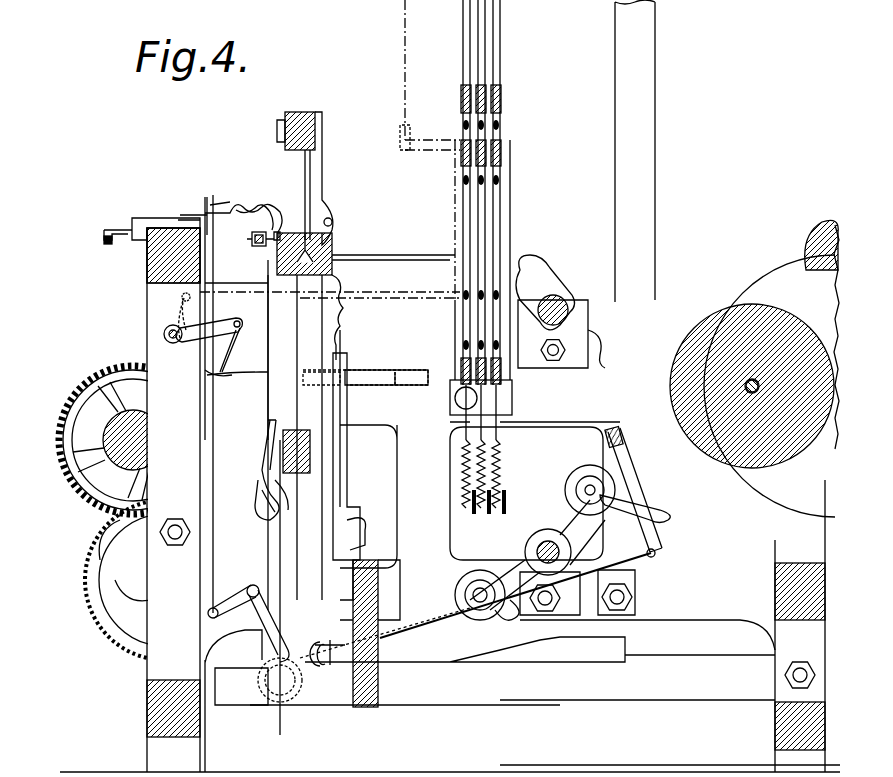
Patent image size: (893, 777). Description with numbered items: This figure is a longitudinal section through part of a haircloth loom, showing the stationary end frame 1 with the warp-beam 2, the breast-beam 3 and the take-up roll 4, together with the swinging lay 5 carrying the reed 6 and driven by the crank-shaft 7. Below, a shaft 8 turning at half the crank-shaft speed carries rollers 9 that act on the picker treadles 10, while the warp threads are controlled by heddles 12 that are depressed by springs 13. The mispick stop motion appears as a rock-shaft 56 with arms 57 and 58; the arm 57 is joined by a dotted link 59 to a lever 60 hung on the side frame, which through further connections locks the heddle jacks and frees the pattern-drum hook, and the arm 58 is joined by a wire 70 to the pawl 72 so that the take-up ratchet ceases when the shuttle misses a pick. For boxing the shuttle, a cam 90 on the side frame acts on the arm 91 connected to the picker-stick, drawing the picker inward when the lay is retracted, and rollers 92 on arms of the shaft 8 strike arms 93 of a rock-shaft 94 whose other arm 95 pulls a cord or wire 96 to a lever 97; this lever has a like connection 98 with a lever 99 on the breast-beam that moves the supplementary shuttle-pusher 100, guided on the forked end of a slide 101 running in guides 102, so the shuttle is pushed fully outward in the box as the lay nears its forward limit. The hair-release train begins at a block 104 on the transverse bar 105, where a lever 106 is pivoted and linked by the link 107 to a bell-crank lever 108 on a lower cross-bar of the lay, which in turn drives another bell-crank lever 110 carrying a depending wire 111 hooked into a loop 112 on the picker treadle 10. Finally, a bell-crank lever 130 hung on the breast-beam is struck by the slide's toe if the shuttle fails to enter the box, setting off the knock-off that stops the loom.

The fixed end frame 1 is at (480, 495).
The warp-beam 2 is at (730, 322).
The breast-beam 3 is at (145, 270).
The take-up roll 4 is at (152, 513).
The swinging lay 5 is at (361, 416).
The reed 6 is at (305, 170).
The crank-shaft 7 is at (567, 297).
The shaft 8 is at (546, 540).
The roller 9 is at (566, 488).
The treadle 10 is at (522, 626).
The heddle 12 is at (461, 103).
The spring 13 is at (470, 498).
The rock-shaft 56 is at (171, 341).
The arm 57 is at (180, 310).
The arm 58 is at (232, 320).
The link 59 is at (365, 296).
The lever 60 is at (455, 213).
The wire 70 is at (230, 350).
The pawl 72 is at (106, 245).
The cam 90 is at (365, 386).
The arm 91 is at (343, 473).
The roller 92 is at (462, 580).
The arm 93 is at (638, 460).
The rock-shaft 94 is at (606, 436).
The arm 95 is at (648, 526).
The cord or wire 96 is at (460, 618).
The lever 97 is at (268, 605).
The connection 98 is at (213, 408).
The lever 99 is at (210, 240).
The supplementary shuttle-pusher 100 is at (254, 212).
The slide 101 is at (183, 214).
The guide 102 is at (158, 220).
The block 104 is at (256, 234).
The transverse bar 105 is at (256, 246).
The lever 106 is at (277, 230).
The link 107 is at (280, 435).
The bell-crank lever 108 is at (274, 420).
The bell-crank lever 110 is at (285, 488).
The wire 111 is at (291, 587).
The loop 112 is at (288, 690).
The bell-crank lever 130 is at (122, 229).